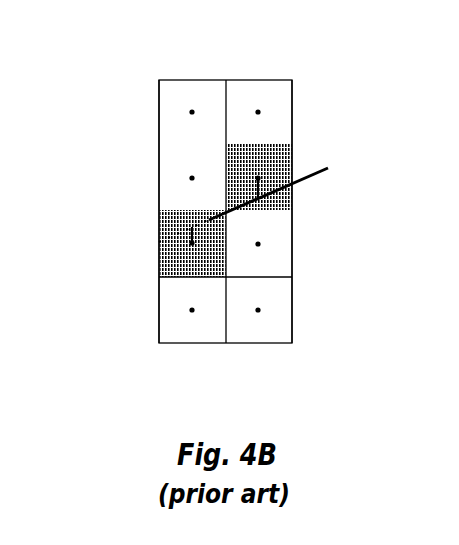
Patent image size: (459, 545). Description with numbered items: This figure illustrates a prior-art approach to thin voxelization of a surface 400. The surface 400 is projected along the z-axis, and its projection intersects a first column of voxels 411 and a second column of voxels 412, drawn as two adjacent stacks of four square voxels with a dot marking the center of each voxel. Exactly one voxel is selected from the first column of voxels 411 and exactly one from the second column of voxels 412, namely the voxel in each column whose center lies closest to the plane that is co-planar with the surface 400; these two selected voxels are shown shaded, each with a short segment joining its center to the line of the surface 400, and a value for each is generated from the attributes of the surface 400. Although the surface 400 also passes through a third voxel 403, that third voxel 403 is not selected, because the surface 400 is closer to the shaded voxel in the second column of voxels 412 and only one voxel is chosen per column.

The surface 400 is at (308, 178).
The third voxel 403 is at (292, 263).
The first column of voxels 411 is at (190, 78).
The second column of voxels 412 is at (258, 78).